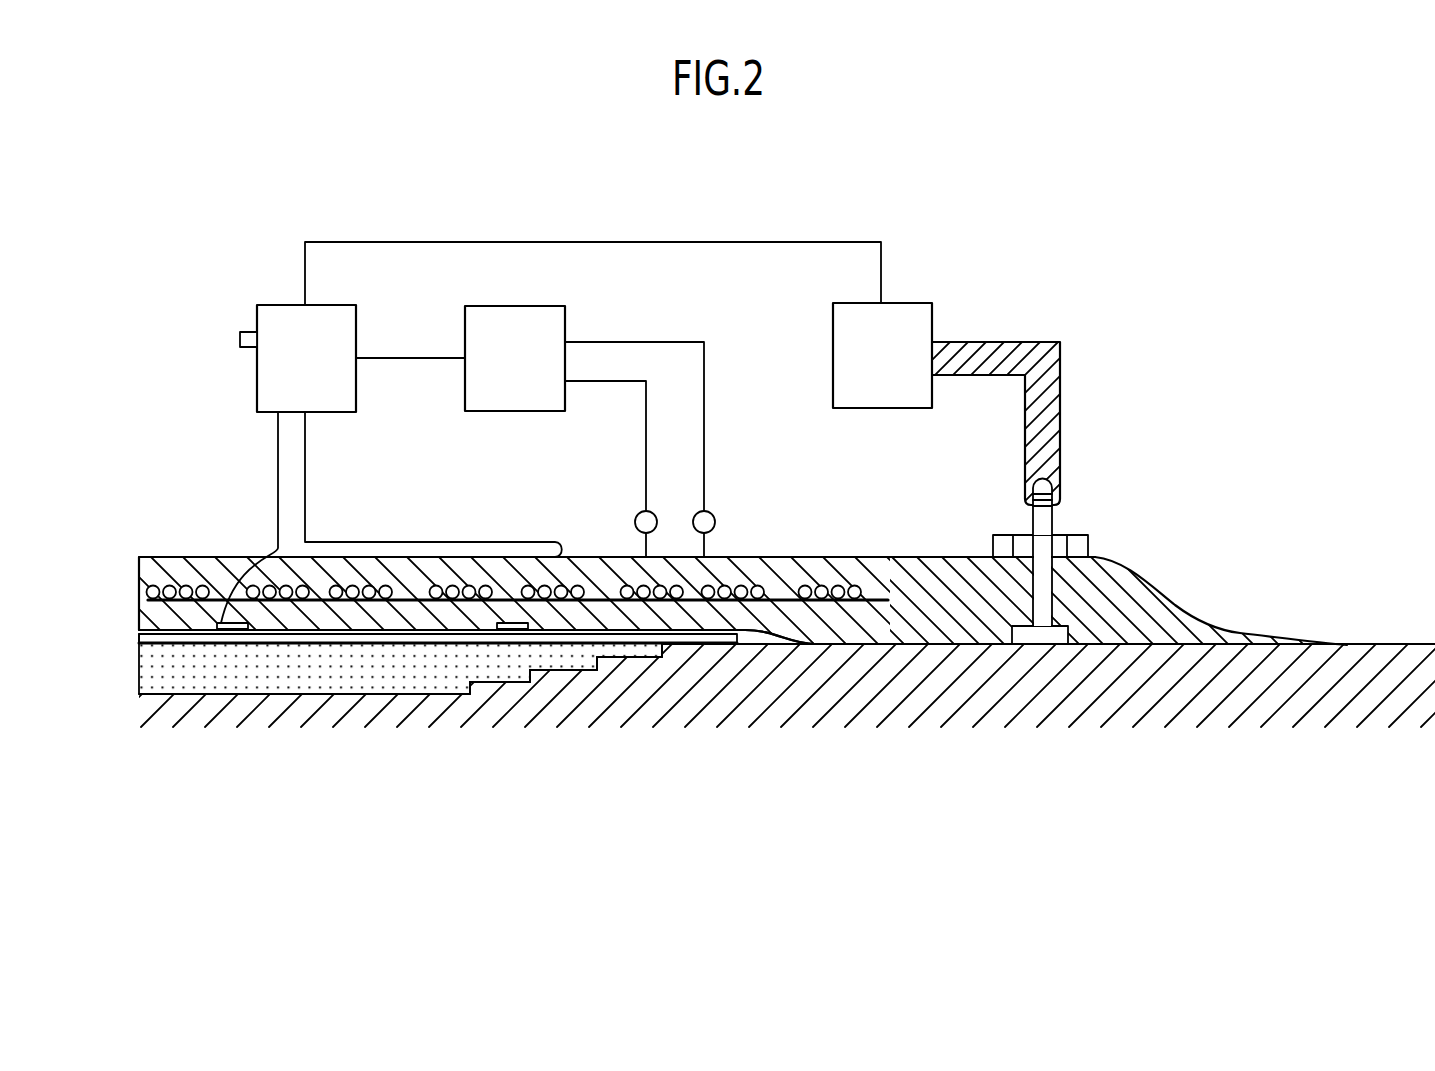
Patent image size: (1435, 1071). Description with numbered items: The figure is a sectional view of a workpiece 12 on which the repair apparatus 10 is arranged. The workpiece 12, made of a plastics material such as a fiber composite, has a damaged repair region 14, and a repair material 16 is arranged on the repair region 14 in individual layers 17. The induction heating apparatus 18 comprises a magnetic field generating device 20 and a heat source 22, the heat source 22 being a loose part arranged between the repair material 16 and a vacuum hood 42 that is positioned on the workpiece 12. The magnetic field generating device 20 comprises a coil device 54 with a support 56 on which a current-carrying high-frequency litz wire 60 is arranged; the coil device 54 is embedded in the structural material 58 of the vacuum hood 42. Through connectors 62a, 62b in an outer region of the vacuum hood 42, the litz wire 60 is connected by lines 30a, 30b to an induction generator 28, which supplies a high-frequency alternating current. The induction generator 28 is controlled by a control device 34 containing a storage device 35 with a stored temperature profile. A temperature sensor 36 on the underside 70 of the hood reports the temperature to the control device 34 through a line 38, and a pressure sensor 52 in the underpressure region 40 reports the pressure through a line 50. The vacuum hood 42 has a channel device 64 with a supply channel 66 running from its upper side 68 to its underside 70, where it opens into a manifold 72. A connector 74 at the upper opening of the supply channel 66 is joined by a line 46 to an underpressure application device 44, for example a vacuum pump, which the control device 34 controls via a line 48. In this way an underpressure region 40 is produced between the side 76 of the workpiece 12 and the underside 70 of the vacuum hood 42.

The repair apparatus 10 is at (1019, 226).
The workpiece 12 is at (650, 703).
The repair region 14 is at (202, 673).
The repair material 16 is at (297, 673).
The individual layers 17 is at (530, 675).
The induction heating apparatus 18 is at (180, 546).
The magnetic field generating device 20 is at (131, 582).
The heat source 22 is at (129, 646).
The induction generator 28 is at (512, 411).
The line 30a is at (602, 381).
The line 30b is at (617, 342).
The control device 34 is at (283, 305).
The storage device 35 is at (243, 332).
The temperature sensor 36 is at (226, 623).
The line 38 is at (277, 447).
The underpressure region 40 is at (757, 645).
The vacuum hood 42 is at (1160, 620).
The underpressure application device 44 is at (905, 303).
The line 46 is at (1032, 342).
The line 48 is at (710, 241).
The line 50 is at (305, 442).
The pressure sensor 52 is at (510, 623).
The coil device 54 is at (780, 575).
The support 56 is at (872, 557).
The structural material 58 is at (920, 557).
The high-frequency litz wire 60 is at (822, 583).
The connector 62a is at (636, 515).
The connector 62b is at (714, 515).
The channel device 64 is at (1115, 528).
The supply channel 66 is at (1045, 597).
The upper side 68 is at (962, 557).
The underside 70 is at (980, 645).
The manifold 72 is at (1072, 645).
The connector 74 is at (1052, 513).
The side 76 is at (800, 645).